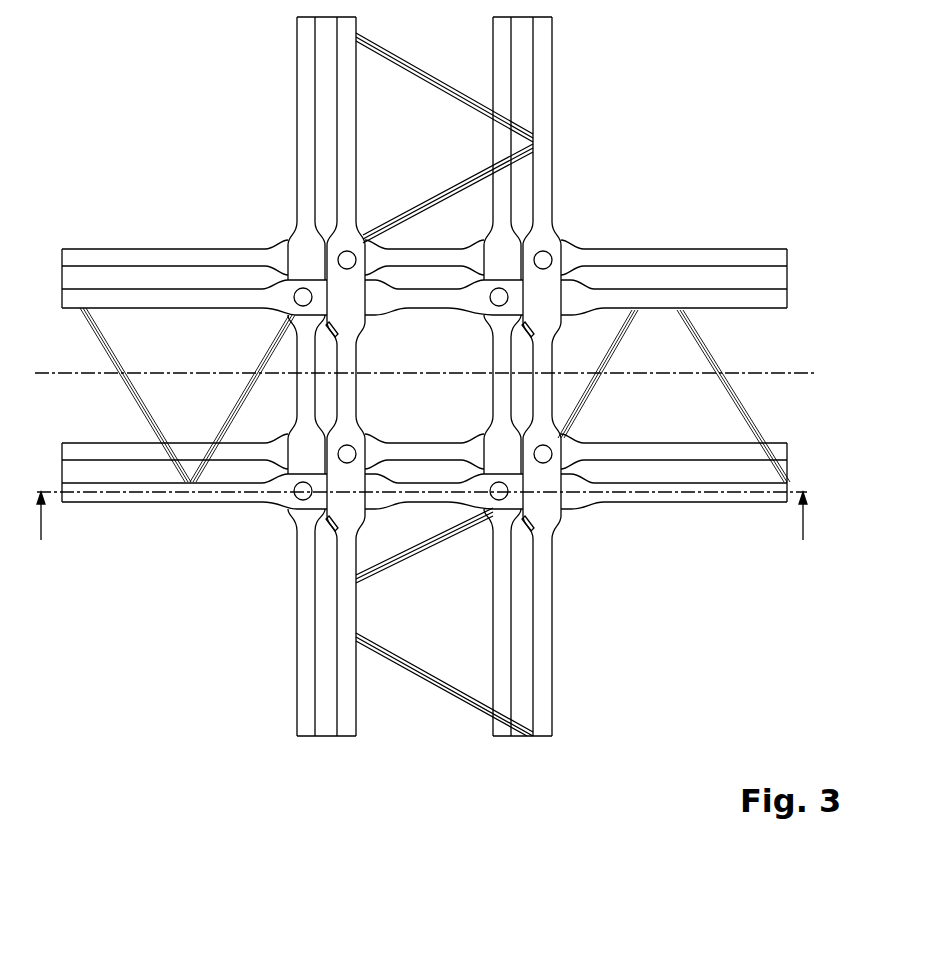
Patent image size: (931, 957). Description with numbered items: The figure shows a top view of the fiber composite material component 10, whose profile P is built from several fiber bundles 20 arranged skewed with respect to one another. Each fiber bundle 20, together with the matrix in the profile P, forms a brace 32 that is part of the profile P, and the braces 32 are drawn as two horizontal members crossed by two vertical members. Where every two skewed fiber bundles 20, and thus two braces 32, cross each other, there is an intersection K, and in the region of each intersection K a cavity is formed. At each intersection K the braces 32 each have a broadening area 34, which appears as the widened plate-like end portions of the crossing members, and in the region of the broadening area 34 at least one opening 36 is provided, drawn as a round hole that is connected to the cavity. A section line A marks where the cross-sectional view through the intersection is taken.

The fiber composite material component 10 is at (220, 164).
The fiber bundle 20 is at (92, 288).
The brace 32 is at (716, 300).
The broadening area 34 is at (513, 307).
The opening 36 is at (547, 253).
The intersection K is at (575, 272).
The profile P is at (660, 553).
The section line A- A is at (423, 516).